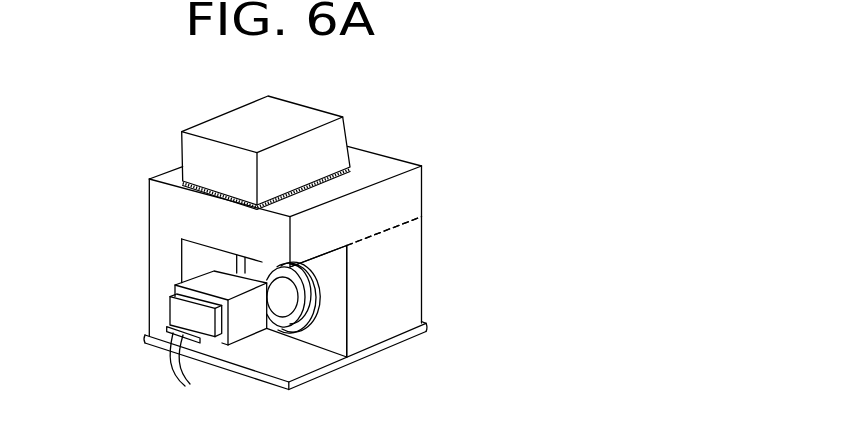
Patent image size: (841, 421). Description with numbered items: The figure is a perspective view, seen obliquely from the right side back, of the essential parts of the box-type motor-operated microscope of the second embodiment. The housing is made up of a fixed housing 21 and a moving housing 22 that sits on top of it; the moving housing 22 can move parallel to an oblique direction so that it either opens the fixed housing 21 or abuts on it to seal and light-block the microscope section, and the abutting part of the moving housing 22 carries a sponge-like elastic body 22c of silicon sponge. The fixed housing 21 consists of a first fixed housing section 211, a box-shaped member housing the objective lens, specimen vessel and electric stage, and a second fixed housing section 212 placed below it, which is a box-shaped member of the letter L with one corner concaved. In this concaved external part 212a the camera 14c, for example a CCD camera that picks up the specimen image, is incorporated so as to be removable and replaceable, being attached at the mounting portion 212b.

The camera 14c is at (203, 287).
The fixed housing 21 is at (395, 212).
The first fixed housing section 211 is at (380, 202).
The second fixed housing section 212 is at (403, 260).
The external part 212a is at (333, 335).
The mounting portion of the camera 212b is at (296, 302).
The moving housing 22 is at (348, 120).
The sponge-like elastic body 22c is at (348, 147).